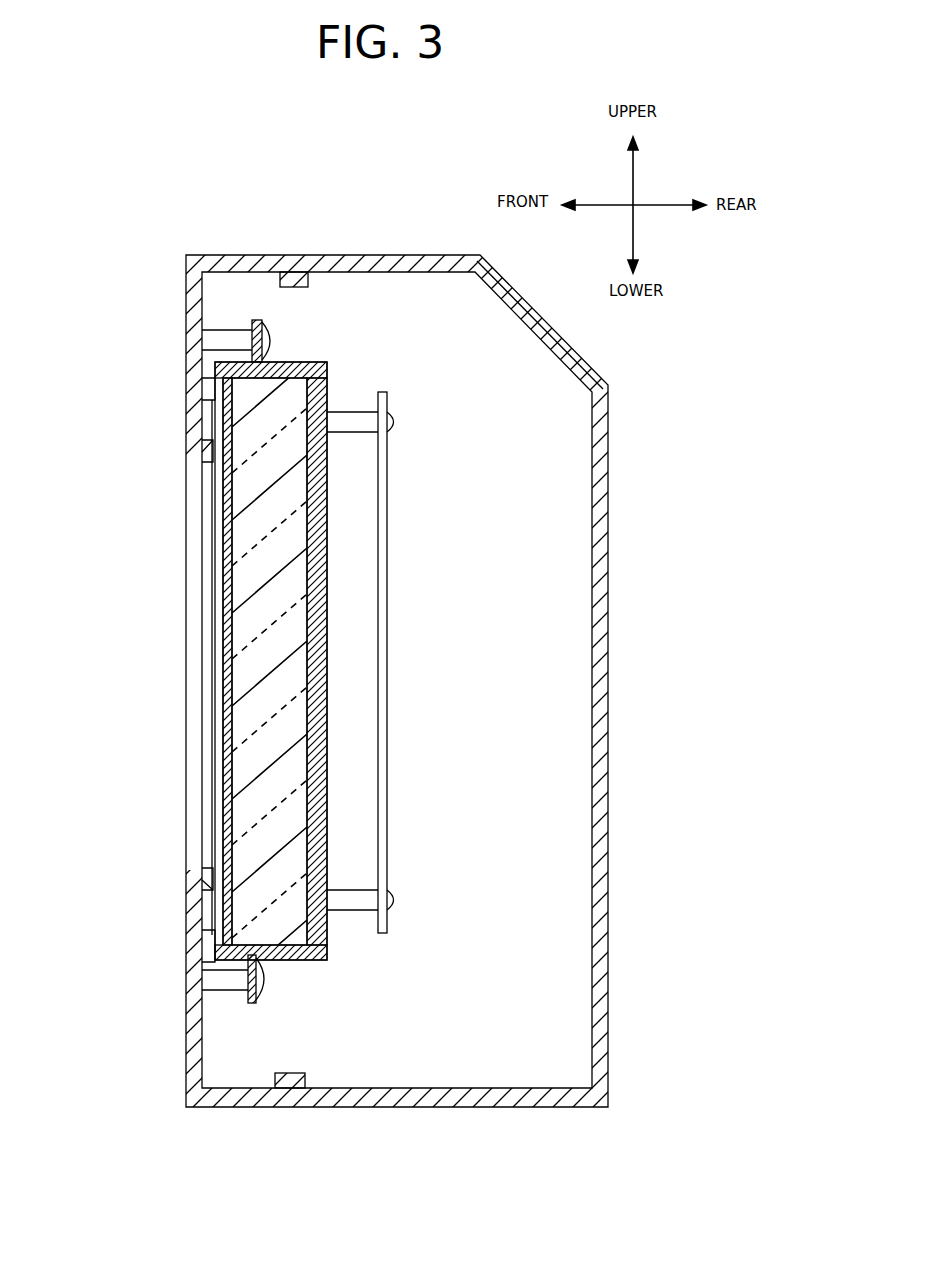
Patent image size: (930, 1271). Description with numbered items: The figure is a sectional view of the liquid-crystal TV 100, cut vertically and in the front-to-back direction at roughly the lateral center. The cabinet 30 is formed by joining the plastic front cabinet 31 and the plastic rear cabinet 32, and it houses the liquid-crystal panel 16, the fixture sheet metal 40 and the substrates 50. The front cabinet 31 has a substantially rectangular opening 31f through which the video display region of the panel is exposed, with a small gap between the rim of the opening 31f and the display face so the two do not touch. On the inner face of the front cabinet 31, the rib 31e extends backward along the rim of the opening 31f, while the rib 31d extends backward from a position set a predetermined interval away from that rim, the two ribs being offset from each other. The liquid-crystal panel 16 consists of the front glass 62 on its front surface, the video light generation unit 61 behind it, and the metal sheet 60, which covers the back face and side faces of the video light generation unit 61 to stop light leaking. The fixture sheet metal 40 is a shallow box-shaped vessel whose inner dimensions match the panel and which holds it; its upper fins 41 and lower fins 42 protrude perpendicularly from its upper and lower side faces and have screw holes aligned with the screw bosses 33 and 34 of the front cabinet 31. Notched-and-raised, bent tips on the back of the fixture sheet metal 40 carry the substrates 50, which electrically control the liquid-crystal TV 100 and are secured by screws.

The liquid-crystal TV 100 is at (186, 256).
The cabinet 30 is at (405, 152).
The front cabinet 31 is at (262, 255).
The rear cabinet 32 is at (373, 255).
The rib 31d is at (210, 392).
The rib 31e is at (206, 448).
The opening 31f is at (188, 806).
The screw boss 33 is at (215, 327).
The screw boss 34 is at (232, 985).
The fixture sheet metal 40 is at (330, 380).
The fin 41 is at (256, 324).
The fin 42 is at (253, 1003).
The substrate 50 is at (390, 518).
The liquid-crystal panel 16 is at (232, 560).
The metal sheet 60 is at (310, 605).
The video light generation unit 61 is at (255, 765).
The front glass 62 is at (232, 710).